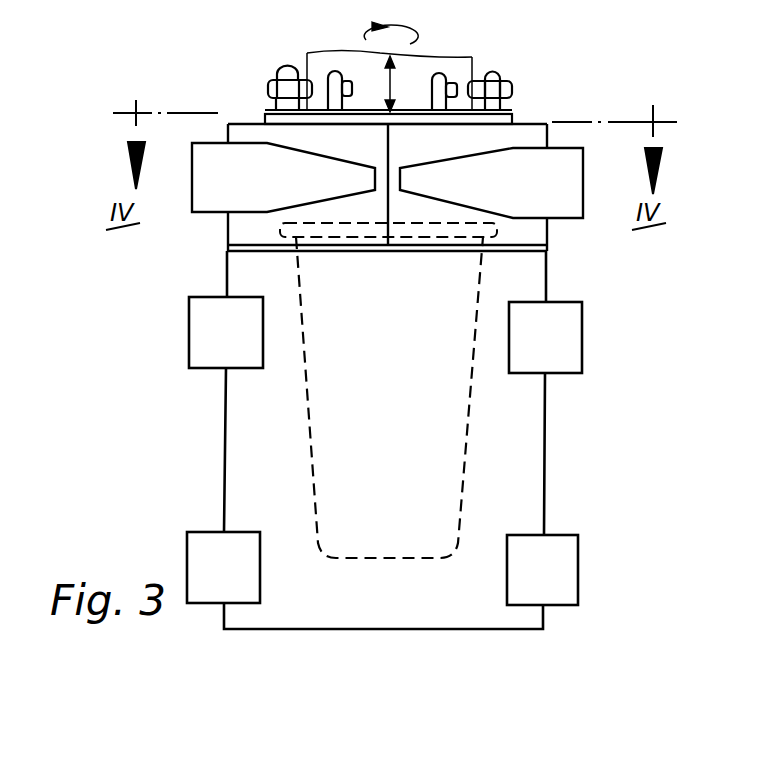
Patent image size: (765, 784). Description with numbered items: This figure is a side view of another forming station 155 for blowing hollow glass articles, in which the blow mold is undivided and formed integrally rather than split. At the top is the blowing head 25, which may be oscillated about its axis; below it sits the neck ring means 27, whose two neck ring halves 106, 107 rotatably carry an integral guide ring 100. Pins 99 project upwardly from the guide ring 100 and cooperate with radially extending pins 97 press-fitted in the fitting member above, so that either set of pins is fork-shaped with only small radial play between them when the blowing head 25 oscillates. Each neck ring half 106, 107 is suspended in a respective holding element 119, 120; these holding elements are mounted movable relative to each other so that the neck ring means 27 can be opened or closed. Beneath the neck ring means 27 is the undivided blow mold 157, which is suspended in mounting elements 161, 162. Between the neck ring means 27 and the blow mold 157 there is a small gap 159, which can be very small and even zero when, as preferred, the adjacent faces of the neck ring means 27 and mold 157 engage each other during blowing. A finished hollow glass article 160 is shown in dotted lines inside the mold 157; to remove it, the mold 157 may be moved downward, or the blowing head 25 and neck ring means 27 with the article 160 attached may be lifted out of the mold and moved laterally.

The blowing head 25 is at (476, 54).
The neck ring means 27 is at (229, 242).
The pins 97 is at (268, 89).
The pins 99 is at (280, 70).
The guide ring 100 is at (513, 118).
The neck ring half 106 is at (228, 227).
The neck ring half 107 is at (548, 226).
The holding element 119 is at (192, 175).
The holding element 120 is at (583, 190).
The forming station 155 is at (148, 289).
The blow mold 157 is at (546, 498).
The gap 159 is at (548, 252).
The hollow glass article 160 is at (465, 421).
The mounting element 161 is at (189, 340).
The mounting element 162 is at (187, 563).